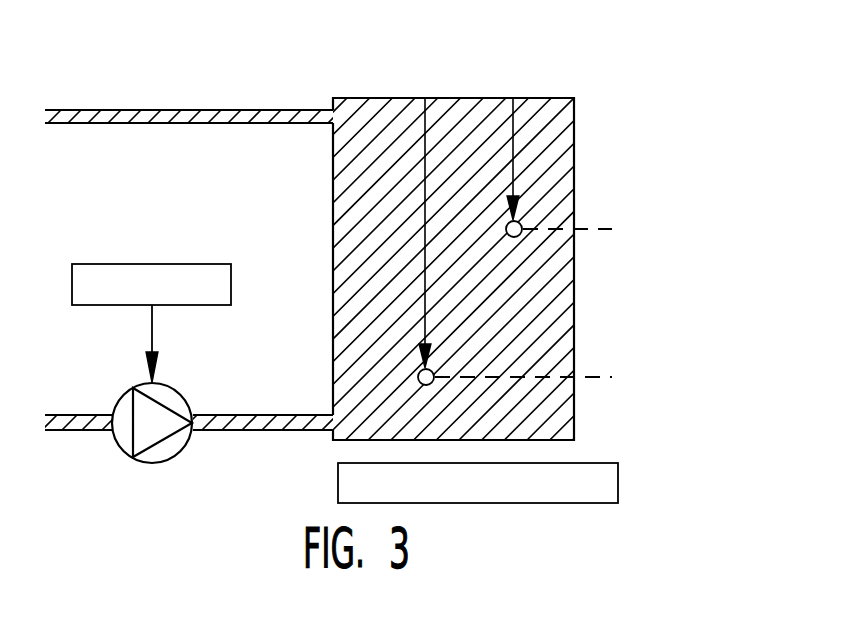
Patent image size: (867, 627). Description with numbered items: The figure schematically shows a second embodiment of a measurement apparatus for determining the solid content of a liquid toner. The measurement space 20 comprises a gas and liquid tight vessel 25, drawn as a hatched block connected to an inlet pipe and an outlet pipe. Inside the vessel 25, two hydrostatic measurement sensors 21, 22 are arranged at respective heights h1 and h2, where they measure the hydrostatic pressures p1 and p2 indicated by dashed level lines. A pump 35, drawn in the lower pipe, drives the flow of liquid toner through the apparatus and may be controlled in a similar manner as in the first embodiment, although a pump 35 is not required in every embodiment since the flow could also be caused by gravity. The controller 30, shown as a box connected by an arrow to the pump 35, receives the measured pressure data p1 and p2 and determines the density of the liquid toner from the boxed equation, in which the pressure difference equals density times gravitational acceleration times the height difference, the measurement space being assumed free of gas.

The measurement space 20 is at (433, 255).
The hydrostatic measurement sensor 21 is at (514, 237).
The hydrostatic measurement sensor 22 is at (418, 372).
The gas and liquid tight vessel 25 is at (475, 98).
The controller 30 is at (157, 265).
The pump 35 is at (157, 455).